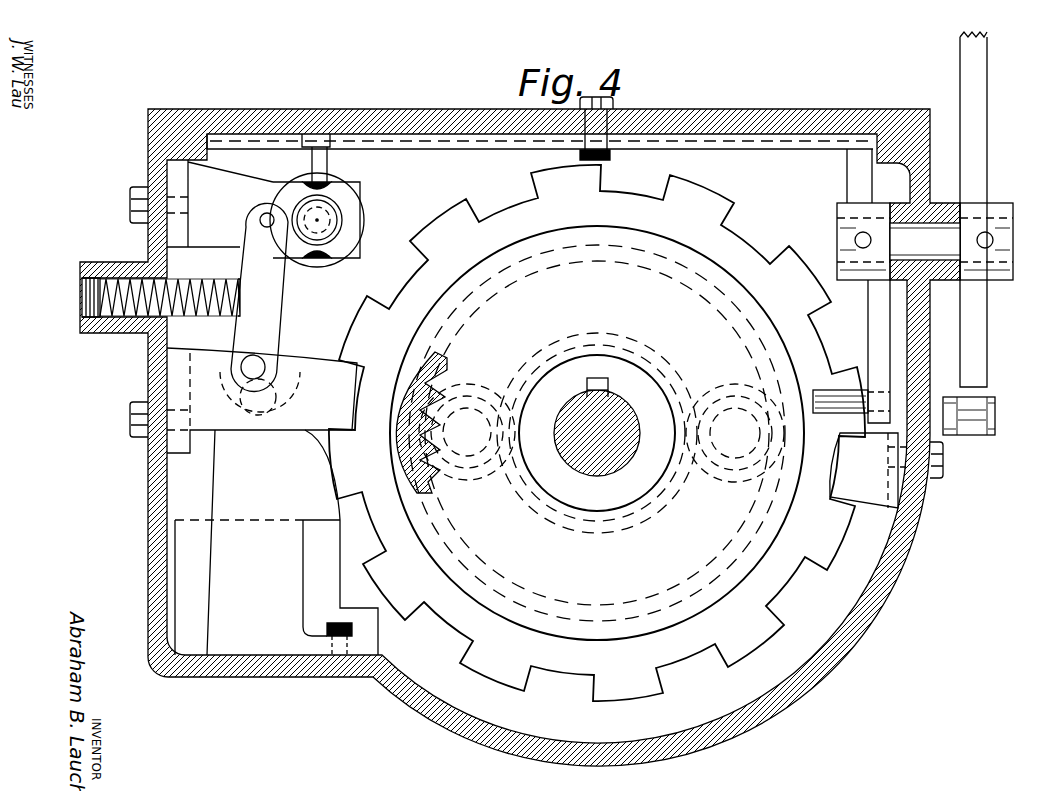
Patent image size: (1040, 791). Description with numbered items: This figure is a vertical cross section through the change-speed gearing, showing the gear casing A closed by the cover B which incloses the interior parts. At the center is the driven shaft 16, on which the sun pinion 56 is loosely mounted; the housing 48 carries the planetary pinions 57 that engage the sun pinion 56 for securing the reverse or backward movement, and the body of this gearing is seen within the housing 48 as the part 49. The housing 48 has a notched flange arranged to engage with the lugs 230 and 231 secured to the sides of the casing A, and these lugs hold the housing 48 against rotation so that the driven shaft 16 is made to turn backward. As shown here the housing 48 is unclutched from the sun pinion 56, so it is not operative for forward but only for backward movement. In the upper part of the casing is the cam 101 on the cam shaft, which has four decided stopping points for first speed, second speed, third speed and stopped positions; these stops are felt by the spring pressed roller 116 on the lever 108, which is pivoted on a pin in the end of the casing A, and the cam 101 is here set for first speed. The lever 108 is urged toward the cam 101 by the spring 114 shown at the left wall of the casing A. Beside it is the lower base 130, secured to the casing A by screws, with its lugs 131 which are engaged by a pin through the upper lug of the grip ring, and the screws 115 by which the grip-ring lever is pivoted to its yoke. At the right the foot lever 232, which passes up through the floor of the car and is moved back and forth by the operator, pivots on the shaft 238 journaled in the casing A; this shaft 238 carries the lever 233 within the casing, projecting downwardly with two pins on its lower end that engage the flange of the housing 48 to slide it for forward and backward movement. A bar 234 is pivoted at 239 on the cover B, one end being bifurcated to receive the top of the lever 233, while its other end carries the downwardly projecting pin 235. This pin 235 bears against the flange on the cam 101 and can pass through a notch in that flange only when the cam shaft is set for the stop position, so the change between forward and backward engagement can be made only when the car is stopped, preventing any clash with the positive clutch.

The driven shaft 16 is at (563, 463).
The housing 48 is at (597, 446).
The gear disc 49 is at (597, 433).
The sun pinion 56 is at (650, 361).
The planetary pinions 57 is at (733, 492).
The cam 101 is at (360, 208).
The lever 108 is at (259, 297).
The spring 114 is at (207, 275).
The screws 115 is at (82, 281).
The spring pressed roller 116 is at (245, 220).
The lower base 130 is at (263, 587).
The lugs 131 is at (218, 466).
The lug 230 is at (262, 400).
The lug 231 is at (868, 470).
The lever 232 is at (975, 147).
The lever 233 is at (878, 307).
The bar 234 is at (795, 148).
The pin 235 is at (326, 162).
The shaft 238 is at (925, 241).
The pivot 239 is at (612, 157).
The gear casing A is at (597, 433).
The cover B is at (682, 110).